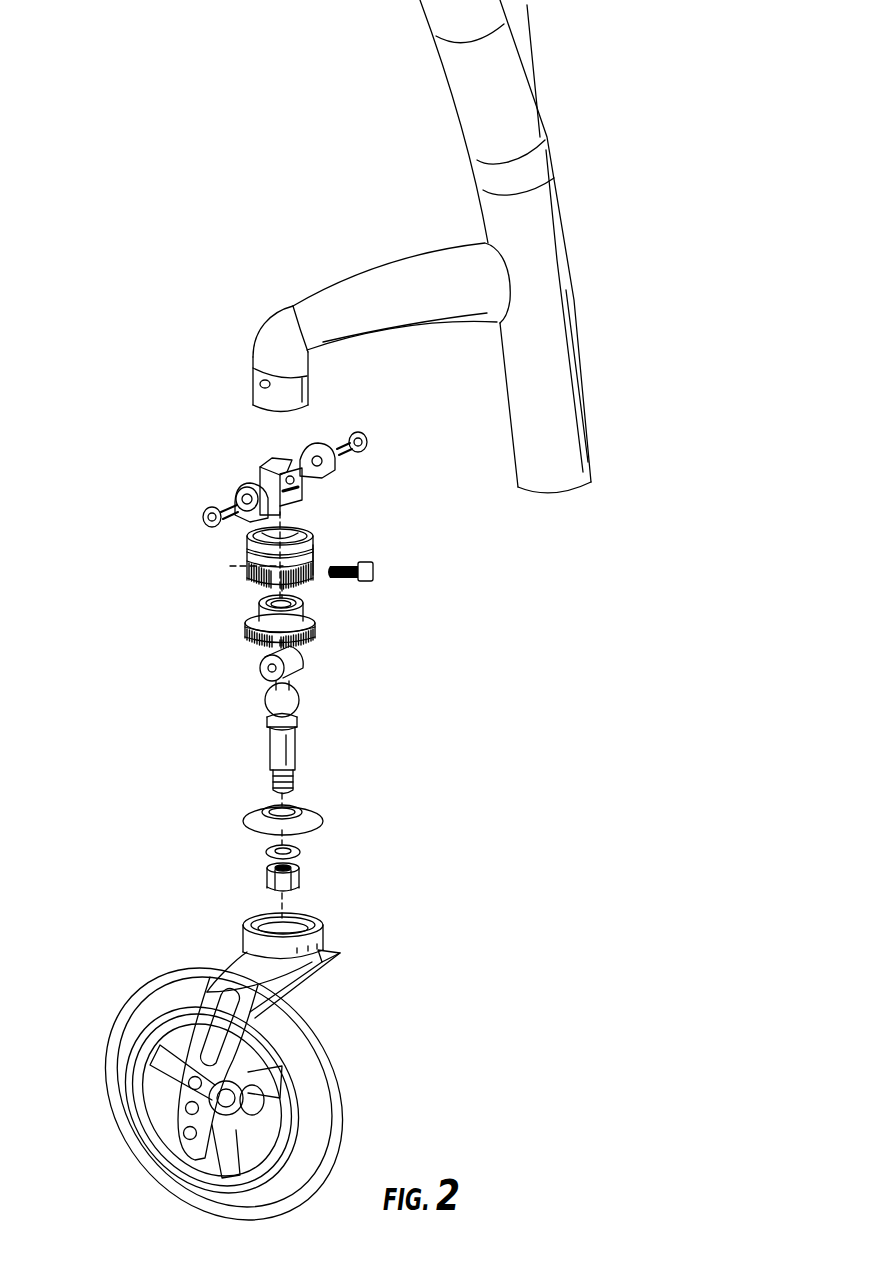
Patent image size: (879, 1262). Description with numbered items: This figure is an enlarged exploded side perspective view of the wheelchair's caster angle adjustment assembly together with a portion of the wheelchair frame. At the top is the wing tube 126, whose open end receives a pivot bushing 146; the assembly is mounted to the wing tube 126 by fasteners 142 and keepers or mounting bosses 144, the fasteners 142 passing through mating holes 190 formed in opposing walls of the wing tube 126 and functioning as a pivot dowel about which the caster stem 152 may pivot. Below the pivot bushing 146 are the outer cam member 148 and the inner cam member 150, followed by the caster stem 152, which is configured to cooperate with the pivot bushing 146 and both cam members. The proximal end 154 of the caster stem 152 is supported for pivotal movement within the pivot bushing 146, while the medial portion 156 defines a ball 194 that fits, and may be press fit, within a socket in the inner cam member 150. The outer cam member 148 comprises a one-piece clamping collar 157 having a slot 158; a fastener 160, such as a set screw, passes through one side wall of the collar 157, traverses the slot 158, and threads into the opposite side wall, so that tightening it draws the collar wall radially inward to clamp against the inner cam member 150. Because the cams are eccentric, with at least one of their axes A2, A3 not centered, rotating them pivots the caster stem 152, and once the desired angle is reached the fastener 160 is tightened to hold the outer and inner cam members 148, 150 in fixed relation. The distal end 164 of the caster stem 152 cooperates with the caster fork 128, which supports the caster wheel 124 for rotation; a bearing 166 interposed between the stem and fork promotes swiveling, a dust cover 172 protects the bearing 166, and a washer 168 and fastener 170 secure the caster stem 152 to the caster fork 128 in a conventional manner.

The caster wheel 124 is at (145, 993).
The wing tube 126 is at (460, 290).
The caster fork 128 is at (262, 1021).
The fasteners 142 is at (373, 437).
The keepers or mounting bosses 144 is at (335, 466).
The pivot bushing 146 is at (250, 452).
The outer cam member 148 is at (233, 576).
The inner cam member 150 is at (327, 631).
The caster stem 152 is at (229, 734).
The proximal end 154 is at (249, 662).
The medial portion 156 is at (349, 699).
The clamping collar 157 is at (310, 558).
The slot 158 is at (282, 530).
The fastener (set screw) 160 is at (376, 572).
The distal end 164 is at (304, 778).
The bearing 166 is at (292, 935).
The washer 168 is at (300, 852).
The fastener 170 is at (265, 876).
The dust cover 172 is at (262, 815).
The holes 190 is at (263, 382).
The ball 194 is at (268, 703).
The axis A2 is at (232, 566).
The axis A3 is at (305, 618).